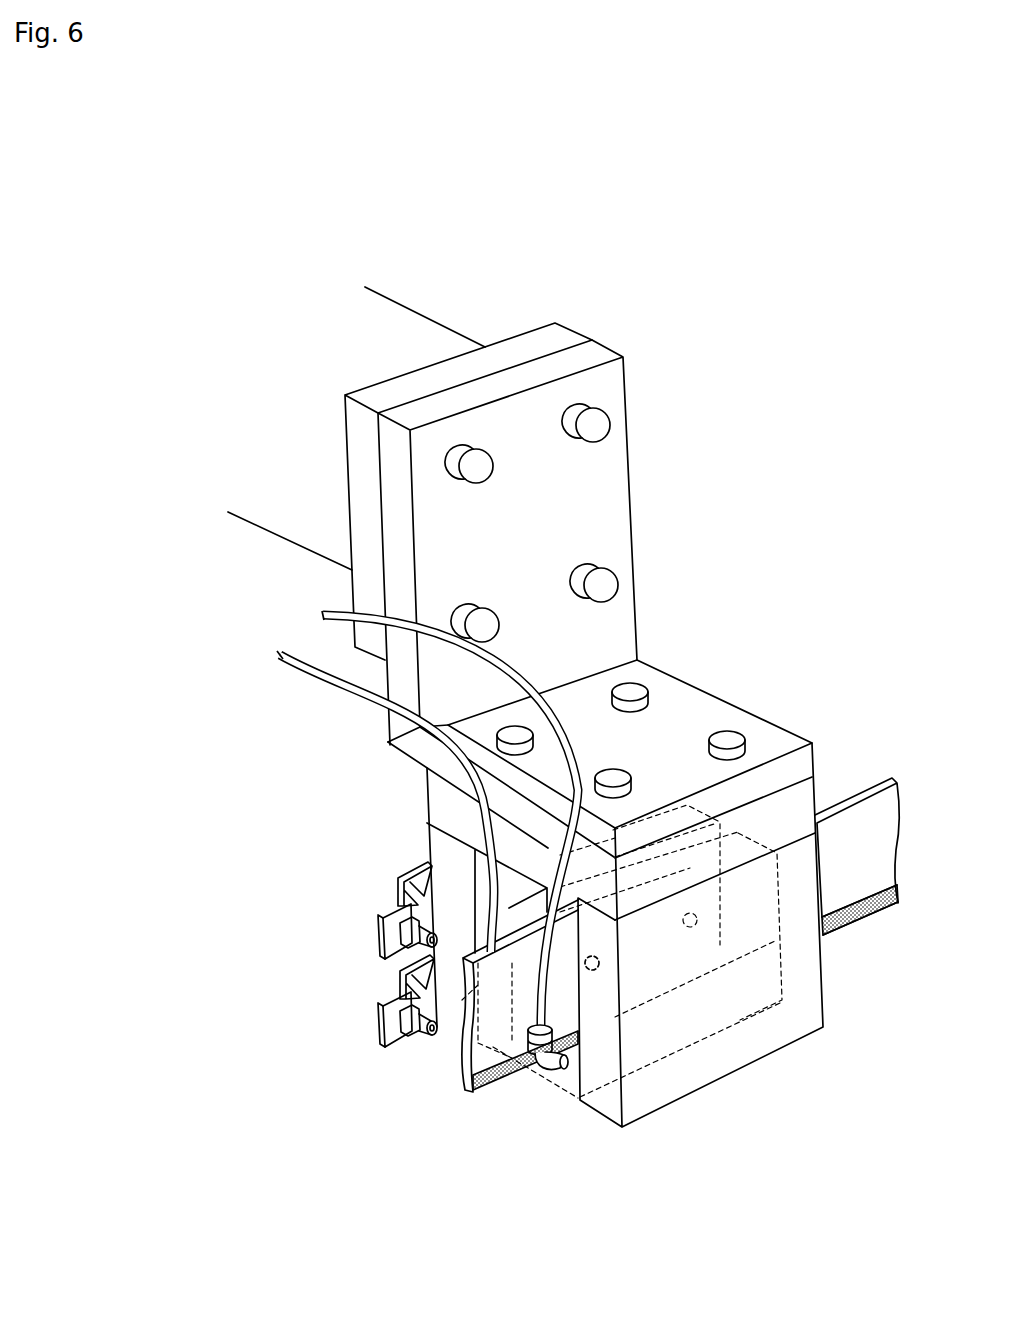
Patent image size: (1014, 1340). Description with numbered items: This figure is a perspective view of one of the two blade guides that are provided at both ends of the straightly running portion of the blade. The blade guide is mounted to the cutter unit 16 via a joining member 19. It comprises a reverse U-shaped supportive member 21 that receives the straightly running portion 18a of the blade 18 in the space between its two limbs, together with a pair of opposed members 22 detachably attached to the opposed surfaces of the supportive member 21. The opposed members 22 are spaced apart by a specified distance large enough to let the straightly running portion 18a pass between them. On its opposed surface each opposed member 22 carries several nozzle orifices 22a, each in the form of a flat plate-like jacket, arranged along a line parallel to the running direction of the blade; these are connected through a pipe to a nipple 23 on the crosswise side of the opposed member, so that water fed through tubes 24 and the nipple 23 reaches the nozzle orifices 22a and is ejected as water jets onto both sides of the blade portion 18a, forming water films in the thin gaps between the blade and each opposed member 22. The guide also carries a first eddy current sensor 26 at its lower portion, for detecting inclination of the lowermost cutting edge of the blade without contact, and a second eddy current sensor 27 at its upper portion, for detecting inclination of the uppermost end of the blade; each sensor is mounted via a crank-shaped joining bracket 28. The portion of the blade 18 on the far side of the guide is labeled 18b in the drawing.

The cutter unit 16 is at (397, 330).
The blade 18 is at (866, 778).
The straightly running portion 18a is at (498, 1077).
The rail portion 18b is at (888, 905).
The joining member 19 is at (582, 507).
The supportive member 21 is at (430, 840).
The opposed member 22 is at (480, 908).
The nozzle orifice 22a is at (615, 963).
The nipple 23 is at (550, 1067).
The tube 24 is at (347, 624).
The first eddy current sensor 26 is at (418, 1037).
The second eddy current sensor 27 is at (428, 953).
The crank-shaped joining bracket 28 is at (378, 925).